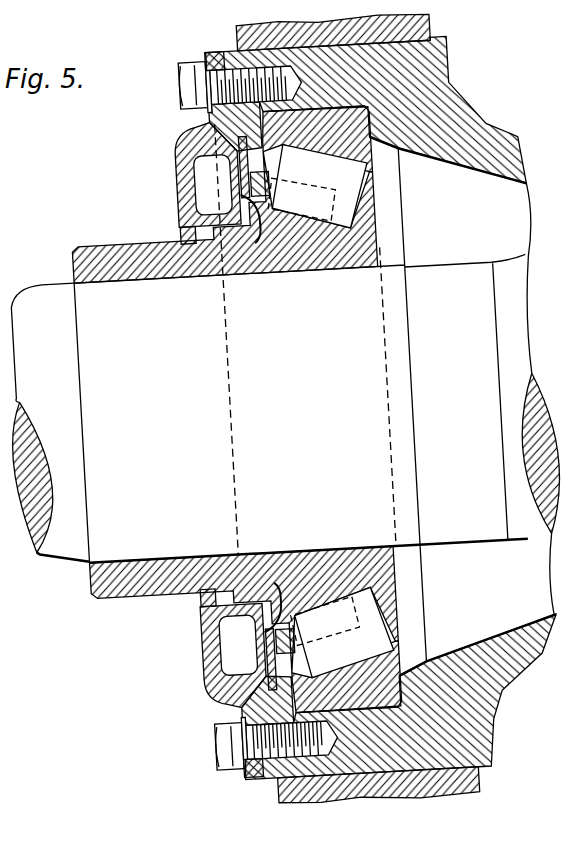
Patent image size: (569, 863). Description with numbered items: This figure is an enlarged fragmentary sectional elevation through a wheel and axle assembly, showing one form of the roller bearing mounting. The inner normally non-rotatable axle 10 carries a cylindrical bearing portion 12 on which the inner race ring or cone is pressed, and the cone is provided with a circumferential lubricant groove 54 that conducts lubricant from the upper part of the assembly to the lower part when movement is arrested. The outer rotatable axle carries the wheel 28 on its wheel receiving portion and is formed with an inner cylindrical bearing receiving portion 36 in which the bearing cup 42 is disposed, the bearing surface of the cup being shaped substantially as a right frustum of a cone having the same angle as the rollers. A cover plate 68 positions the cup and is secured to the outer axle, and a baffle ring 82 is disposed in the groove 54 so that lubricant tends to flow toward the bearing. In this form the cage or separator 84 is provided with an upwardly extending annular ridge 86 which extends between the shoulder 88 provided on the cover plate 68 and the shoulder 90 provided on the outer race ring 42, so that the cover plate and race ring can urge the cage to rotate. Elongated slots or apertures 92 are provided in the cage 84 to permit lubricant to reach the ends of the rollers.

The inner normally non-rotatable axle 10 is at (58, 543).
The cylindrical bearing portion 12 is at (317, 392).
The wheel 28 is at (236, 31).
The inner cylindrical bearing receiving portion 36 is at (431, 18).
The bearing cup 42 is at (358, 120).
The lubricant groove 54 is at (252, 258).
The cover plate 68 is at (178, 173).
The baffle ring 82 is at (232, 193).
The cage or separator 84 is at (188, 157).
The upwardly extending annular ridge 86 is at (182, 100).
The shoulder 88 is at (206, 133).
The shoulder 90 is at (318, 110).
The elongated slots or apertures 92 is at (280, 657).